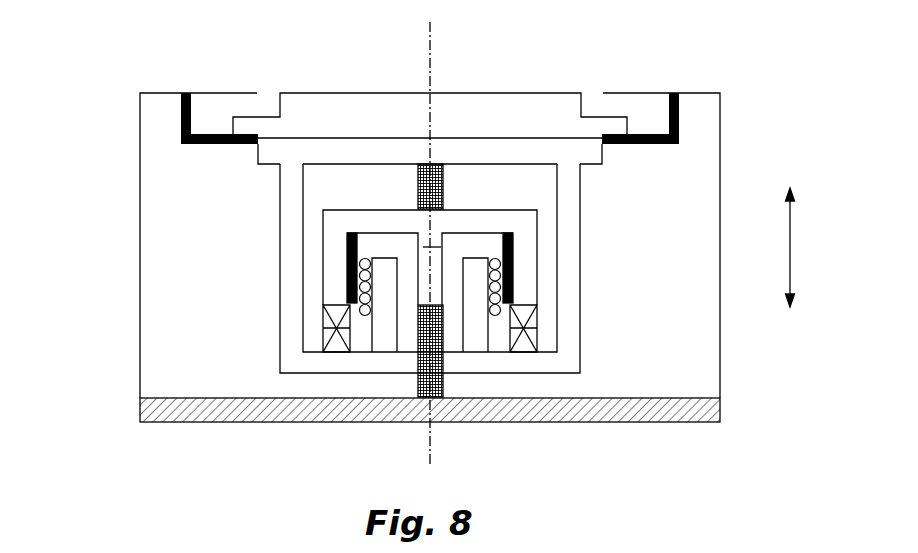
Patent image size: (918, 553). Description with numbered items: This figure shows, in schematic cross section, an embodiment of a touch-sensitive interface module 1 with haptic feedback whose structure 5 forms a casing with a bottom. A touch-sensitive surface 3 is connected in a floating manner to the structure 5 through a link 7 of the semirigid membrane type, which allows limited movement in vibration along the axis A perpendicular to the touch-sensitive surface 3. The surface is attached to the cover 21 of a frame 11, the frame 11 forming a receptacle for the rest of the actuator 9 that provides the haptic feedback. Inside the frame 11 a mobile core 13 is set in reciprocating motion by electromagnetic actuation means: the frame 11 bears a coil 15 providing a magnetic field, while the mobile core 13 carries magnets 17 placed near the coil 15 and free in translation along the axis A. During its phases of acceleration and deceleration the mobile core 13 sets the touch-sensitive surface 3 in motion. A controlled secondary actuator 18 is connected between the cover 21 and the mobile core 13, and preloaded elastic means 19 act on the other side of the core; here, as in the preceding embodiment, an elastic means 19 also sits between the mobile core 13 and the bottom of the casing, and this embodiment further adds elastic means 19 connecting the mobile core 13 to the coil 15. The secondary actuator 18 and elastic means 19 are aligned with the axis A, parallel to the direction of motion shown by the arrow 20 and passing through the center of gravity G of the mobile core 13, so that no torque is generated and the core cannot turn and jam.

The touch-sensitive interface module 1 is at (93, 70).
The touch-sensitive surface 3 is at (430, 113).
The structure 5 is at (142, 80).
The link 7 is at (200, 114).
The actuator 9 is at (233, 163).
The frame 11 is at (388, 386).
The mobile core 13 is at (323, 290).
The coil 15 is at (529, 365).
The magnet 17 is at (512, 288).
The secondary actuator 18 is at (455, 164).
The elastic means 19 is at (323, 366).
The arrow 20 is at (774, 247).
The cover 21 is at (337, 135).
The center of gravity G is at (460, 247).
The axis A is at (450, 264).